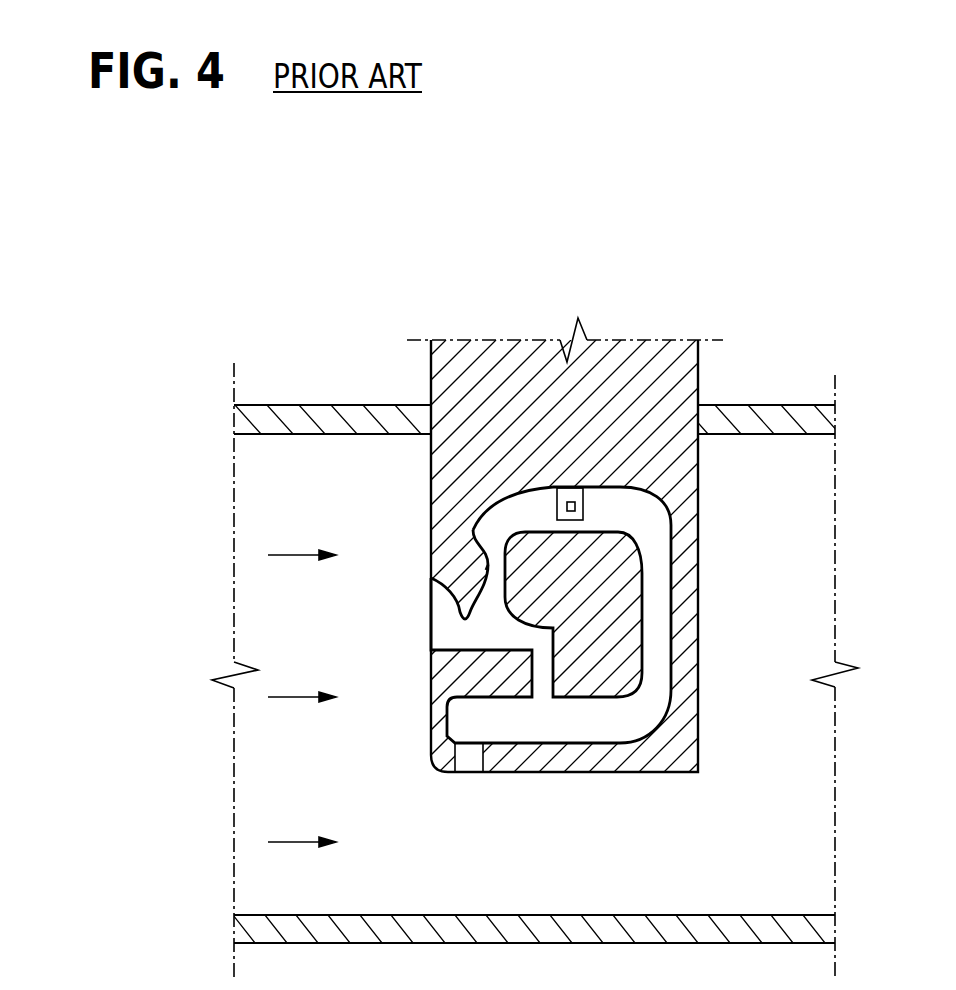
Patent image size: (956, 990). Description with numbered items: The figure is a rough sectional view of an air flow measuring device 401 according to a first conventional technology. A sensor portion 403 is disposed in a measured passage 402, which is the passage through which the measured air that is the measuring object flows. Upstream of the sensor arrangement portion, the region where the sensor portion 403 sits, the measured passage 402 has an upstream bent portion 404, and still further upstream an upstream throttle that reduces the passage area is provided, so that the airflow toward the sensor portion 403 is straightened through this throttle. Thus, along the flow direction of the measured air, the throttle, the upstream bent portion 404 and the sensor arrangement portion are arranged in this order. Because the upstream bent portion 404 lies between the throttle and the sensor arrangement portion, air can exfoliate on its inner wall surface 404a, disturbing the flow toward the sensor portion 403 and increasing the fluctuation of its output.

The air flow measuring device 401 is at (416, 367).
The measured passage 402 is at (662, 603).
The sensor portion 403 is at (575, 506).
The upstream bent portion 404 is at (512, 523).
The inner wall surface 404a is at (512, 542).